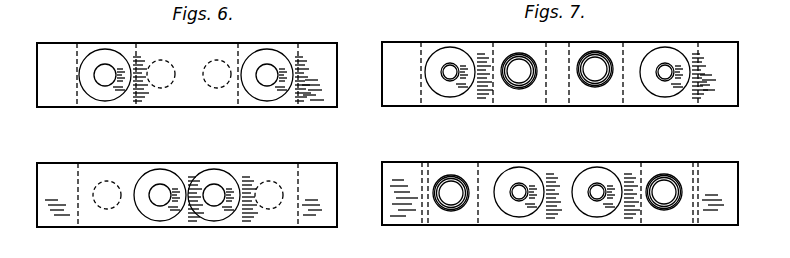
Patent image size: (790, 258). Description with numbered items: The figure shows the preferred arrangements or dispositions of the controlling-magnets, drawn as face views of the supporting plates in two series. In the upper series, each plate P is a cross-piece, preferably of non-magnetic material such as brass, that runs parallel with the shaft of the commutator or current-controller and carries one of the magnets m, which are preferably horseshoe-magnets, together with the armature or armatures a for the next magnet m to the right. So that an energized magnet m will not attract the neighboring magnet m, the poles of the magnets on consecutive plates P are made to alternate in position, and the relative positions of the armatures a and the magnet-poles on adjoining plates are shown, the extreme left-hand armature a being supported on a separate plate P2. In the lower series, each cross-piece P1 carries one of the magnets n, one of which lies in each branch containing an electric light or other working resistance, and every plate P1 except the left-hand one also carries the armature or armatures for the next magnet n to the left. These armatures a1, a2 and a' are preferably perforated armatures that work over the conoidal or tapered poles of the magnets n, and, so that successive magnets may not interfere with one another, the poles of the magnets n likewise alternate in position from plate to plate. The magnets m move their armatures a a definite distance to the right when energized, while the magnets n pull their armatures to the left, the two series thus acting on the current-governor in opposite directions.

In FIG. 6, the cross-piece (plate) P is at (191, 168).
In FIG. 6, the magnet m is at (195, 135).
In FIG. 6, the armature a is at (193, 134).
In FIG. 7, the cross-piece (plate) P1 is at (560, 83).
In FIG. 7, the plate P2 is at (558, 166).
In FIG. 7, the magnet n is at (566, 132).
In FIG. 7, the armature a1 is at (519, 83).
In FIG. 7, the armature a2 is at (606, 62).
In FIG. 7, the armature a' is at (560, 174).